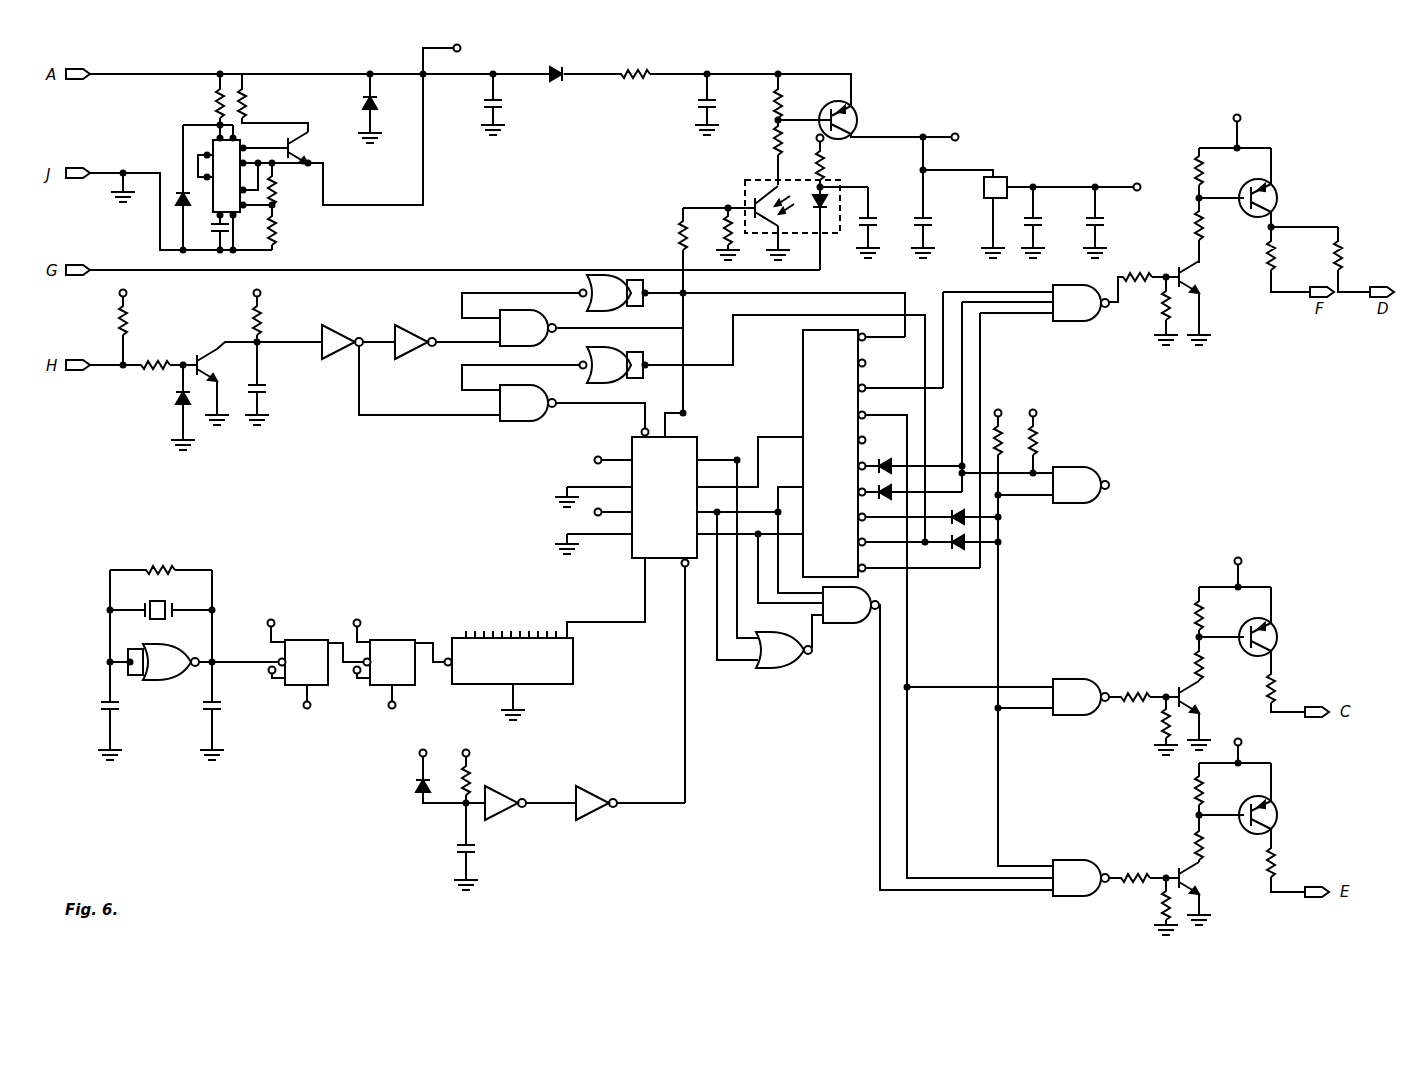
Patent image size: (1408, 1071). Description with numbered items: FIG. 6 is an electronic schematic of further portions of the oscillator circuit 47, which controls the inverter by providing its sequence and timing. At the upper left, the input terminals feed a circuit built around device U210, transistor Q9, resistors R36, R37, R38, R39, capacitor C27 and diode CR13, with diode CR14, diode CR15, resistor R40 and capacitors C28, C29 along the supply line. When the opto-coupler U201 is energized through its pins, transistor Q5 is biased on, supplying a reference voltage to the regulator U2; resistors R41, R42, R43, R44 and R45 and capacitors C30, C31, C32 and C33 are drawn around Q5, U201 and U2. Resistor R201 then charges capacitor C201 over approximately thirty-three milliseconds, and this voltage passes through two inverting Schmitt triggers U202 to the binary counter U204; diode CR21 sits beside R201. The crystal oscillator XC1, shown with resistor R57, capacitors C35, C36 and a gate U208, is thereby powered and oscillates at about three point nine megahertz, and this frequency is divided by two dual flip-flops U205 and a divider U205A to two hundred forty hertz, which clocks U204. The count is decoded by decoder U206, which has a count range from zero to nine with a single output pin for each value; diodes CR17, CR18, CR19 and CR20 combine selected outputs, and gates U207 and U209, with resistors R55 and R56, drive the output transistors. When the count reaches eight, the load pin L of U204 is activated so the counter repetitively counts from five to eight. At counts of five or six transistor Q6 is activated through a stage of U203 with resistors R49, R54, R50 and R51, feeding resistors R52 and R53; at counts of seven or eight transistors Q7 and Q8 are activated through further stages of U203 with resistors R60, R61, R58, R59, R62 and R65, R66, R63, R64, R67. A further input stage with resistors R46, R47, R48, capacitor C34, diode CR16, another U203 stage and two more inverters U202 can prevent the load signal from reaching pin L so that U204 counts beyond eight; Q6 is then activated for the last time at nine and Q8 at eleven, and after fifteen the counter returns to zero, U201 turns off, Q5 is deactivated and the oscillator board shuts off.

The oscillator circuit board 47 is at (302, 813).
The resistor R36 is at (202, 100).
The resistor R37 is at (273, 103).
The resistor R38 is at (289, 189).
The resistor R39 is at (290, 232).
The resistor R40 is at (636, 63).
The resistor R41 is at (802, 97).
The resistor R42 is at (795, 152).
The resistor R43 is at (836, 165).
The resistor R44 is at (688, 309).
The resistor R45 is at (716, 234).
The resistor R46 is at (139, 328).
The resistor R47 is at (154, 353).
The resistor R48 is at (273, 338).
The resistor R49 is at (1144, 276).
The resistor R50 is at (1200, 175).
The resistor R51 is at (1216, 230).
The resistor R52 is at (1288, 259).
The resistor R53 is at (1355, 259).
The resistor R54 is at (1150, 311).
The resistor R55 is at (1023, 638).
The resistor R56 is at (1049, 442).
The resistor R57 is at (161, 622).
The resistor R58 is at (1214, 599).
The resistor R59 is at (1216, 659).
The resistor R60 is at (1144, 685).
The resistor R61 is at (1152, 726).
The resistor R62 is at (1288, 692).
The resistor R63 is at (1215, 779).
The resistor R64 is at (1216, 838).
The resistor R65 is at (1144, 866).
The resistor R66 is at (1152, 906).
The resistor R67 is at (1288, 869).
The resistor R201 is at (487, 798).
The capacitor C27 is at (209, 233).
The capacitor C28 is at (507, 103).
The capacitor C29 is at (721, 103).
The capacitor C30 is at (881, 222).
The capacitor C31 is at (936, 197).
The capacitor C32 is at (1046, 221).
The capacitor C33 is at (1108, 221).
The capacitor C34 is at (270, 404).
The capacitor C35 is at (124, 730).
The capacitor C36 is at (226, 730).
The capacitor C201 is at (484, 867).
The diode CR13 is at (180, 194).
The diode CR14 is at (353, 107).
The diode CR15 is at (563, 64).
The diode CR16 is at (159, 407).
The diode CR17 is at (917, 457).
The diode CR18 is at (960, 492).
The diode CR19 is at (971, 507).
The diode CR20 is at (966, 549).
The diode CR21 is at (418, 777).
The transistor Q5 is at (855, 108).
The transistor Q6 is at (1279, 195).
The transistor Q7 is at (1278, 631).
The transistor Q8 is at (1279, 810).
The transistor Q9 is at (346, 139).
The regulator U2 is at (999, 178).
The opto-coupler U201 is at (776, 183).
The inverting Schmitt trigger U202 is at (345, 330).
The transistor array U203 is at (1179, 268).
The binary counter U204 is at (689, 607).
The dual flip-flop U205 is at (356, 664).
The divider U205A is at (509, 675).
The decoder U206 is at (928, 603).
The NAND gate U207 is at (804, 512).
The NOR gate U208 is at (517, 477).
The NAND gate U209 is at (966, 590).
The comparator U210 is at (211, 152).
The crystal oscillator XC1 is at (161, 599).